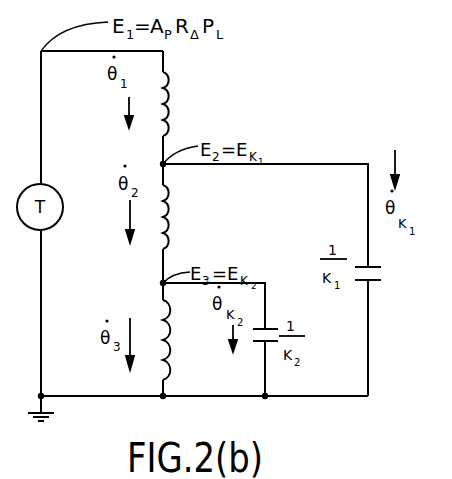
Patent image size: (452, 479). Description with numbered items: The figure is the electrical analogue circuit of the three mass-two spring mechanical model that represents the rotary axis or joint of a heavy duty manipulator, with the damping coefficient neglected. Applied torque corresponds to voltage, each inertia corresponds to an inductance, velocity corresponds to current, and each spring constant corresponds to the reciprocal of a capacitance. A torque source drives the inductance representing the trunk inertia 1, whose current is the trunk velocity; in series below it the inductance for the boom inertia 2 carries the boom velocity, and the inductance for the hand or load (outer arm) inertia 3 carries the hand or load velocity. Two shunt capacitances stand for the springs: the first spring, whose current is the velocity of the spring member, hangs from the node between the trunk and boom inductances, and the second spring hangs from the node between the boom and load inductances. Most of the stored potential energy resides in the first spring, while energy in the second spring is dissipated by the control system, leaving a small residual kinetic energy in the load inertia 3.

The trunk inertia 1 is at (188, 104).
The boom inertia 2 is at (184, 217).
The hand or load (outer arm) inertia 3 is at (188, 340).